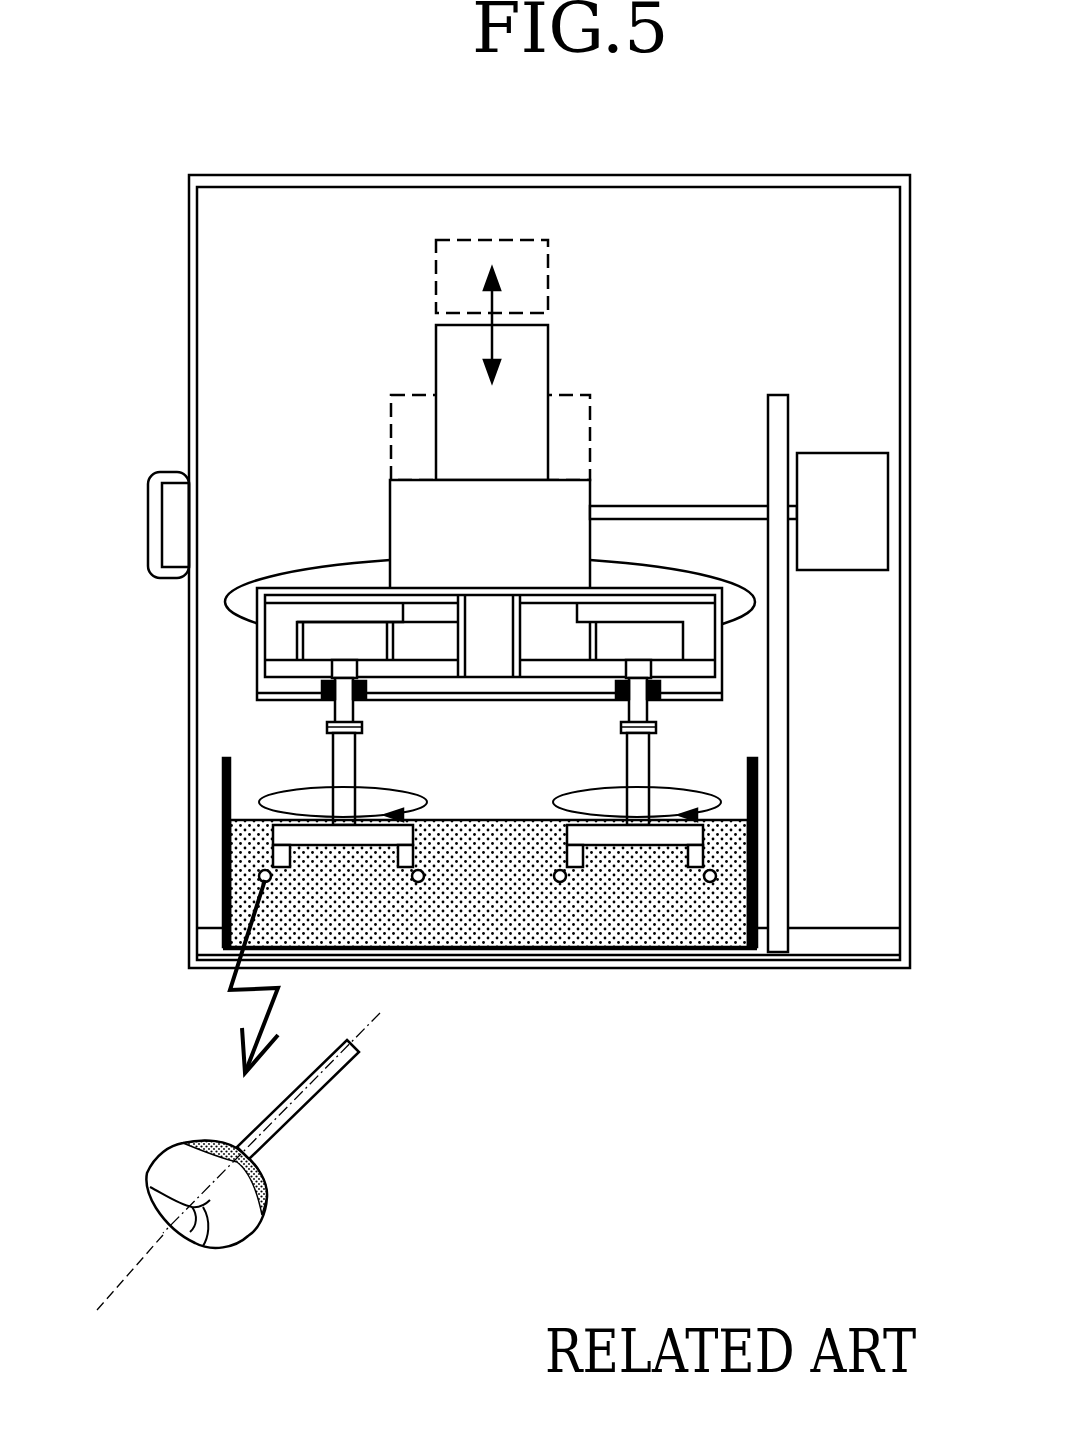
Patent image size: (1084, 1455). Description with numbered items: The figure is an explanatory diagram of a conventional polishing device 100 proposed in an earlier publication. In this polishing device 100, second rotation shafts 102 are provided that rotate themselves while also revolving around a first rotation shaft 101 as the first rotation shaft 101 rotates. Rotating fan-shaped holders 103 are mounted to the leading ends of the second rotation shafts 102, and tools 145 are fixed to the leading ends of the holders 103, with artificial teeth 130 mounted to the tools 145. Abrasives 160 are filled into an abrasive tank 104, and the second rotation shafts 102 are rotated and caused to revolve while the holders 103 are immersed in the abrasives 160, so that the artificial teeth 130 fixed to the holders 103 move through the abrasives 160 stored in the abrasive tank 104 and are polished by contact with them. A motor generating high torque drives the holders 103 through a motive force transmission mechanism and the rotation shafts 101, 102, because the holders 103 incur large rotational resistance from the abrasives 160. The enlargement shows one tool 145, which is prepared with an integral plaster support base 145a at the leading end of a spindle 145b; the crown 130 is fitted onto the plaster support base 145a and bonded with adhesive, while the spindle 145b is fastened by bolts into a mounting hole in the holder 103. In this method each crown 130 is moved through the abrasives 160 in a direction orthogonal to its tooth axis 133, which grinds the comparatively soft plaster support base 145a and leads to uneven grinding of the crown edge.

The polishing device 100 is at (463, 132).
The first rotation shaft 101 is at (487, 642).
The second rotation shaft 102 is at (353, 763).
The holder 103 is at (368, 838).
The abrasive tank 104 is at (753, 785).
The artificial tooth (crown) 130 is at (265, 882).
The tooth axis 133 is at (143, 1265).
The tool 145 is at (337, 1130).
The plaster support base 145a is at (265, 1187).
The spindle 145b is at (337, 1077).
The abrasives 160 is at (683, 917).